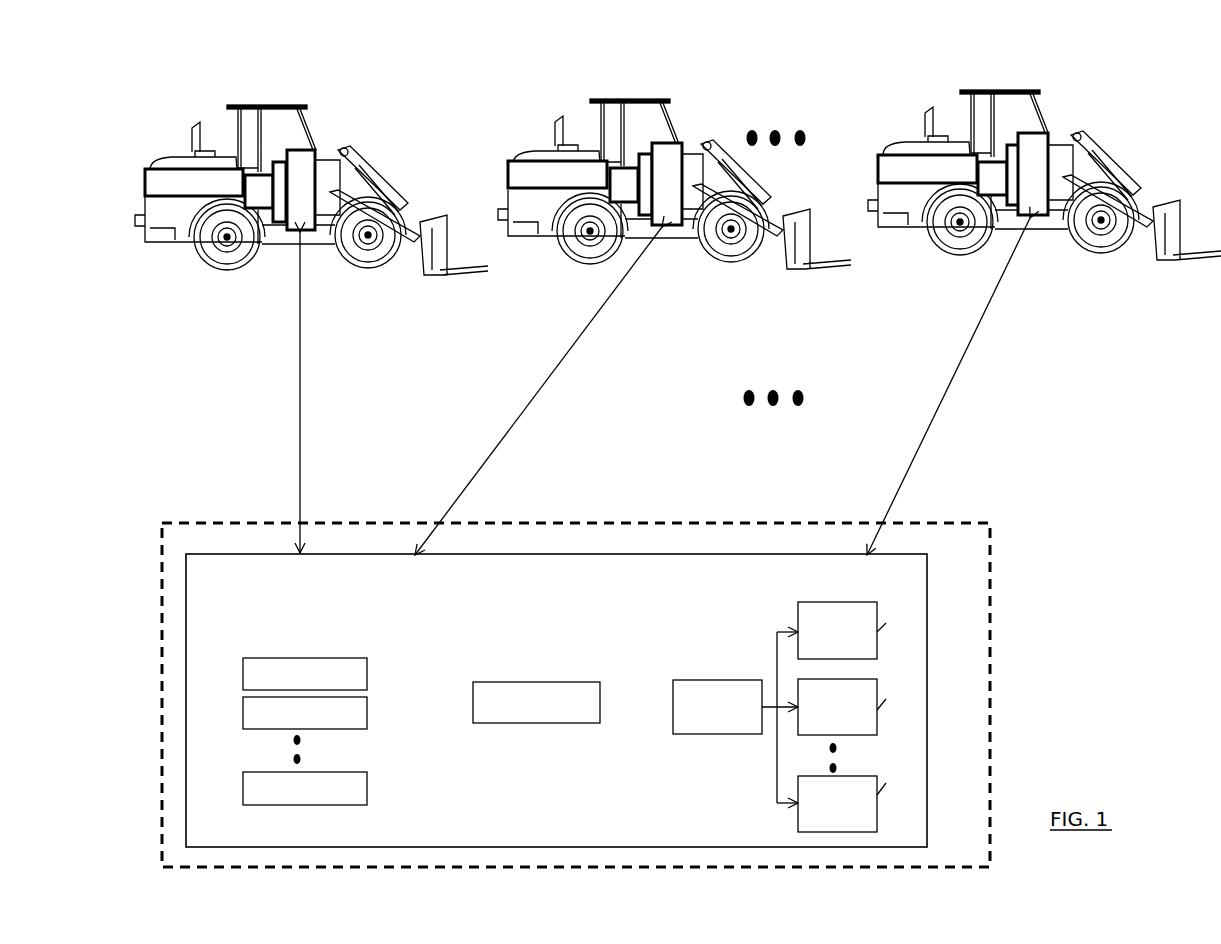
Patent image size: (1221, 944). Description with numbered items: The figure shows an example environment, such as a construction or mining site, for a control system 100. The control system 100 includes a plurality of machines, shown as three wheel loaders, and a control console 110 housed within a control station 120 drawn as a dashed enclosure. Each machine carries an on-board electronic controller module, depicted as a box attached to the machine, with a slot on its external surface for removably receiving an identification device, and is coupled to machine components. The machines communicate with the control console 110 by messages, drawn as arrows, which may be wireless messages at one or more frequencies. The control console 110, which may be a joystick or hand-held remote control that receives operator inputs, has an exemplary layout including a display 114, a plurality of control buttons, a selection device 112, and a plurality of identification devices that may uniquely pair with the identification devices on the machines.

The control system 100 is at (1120, 80).
The control console 110 is at (933, 676).
The selection device 112 is at (695, 736).
The display 114 is at (543, 723).
The control station 120 is at (995, 656).